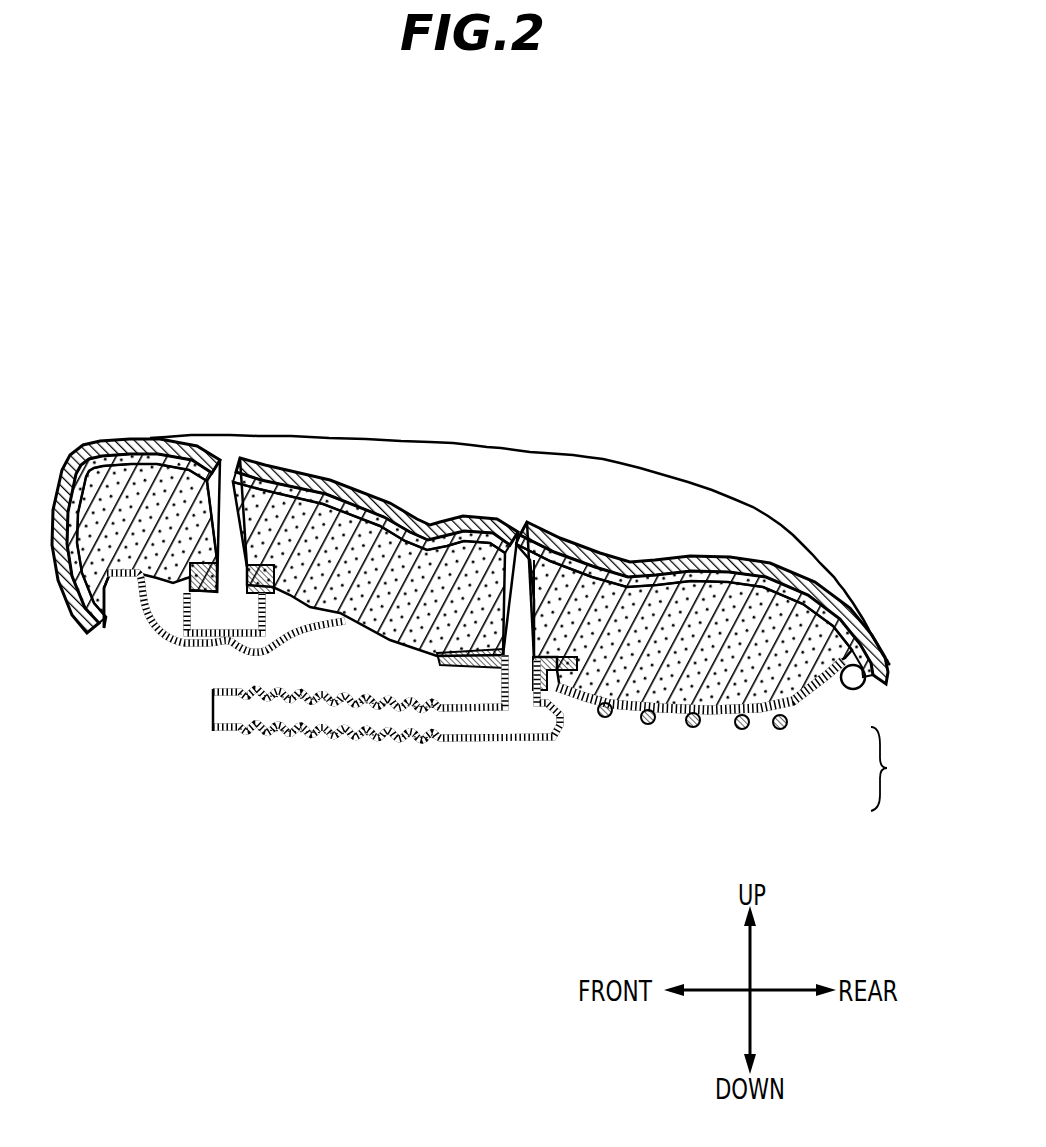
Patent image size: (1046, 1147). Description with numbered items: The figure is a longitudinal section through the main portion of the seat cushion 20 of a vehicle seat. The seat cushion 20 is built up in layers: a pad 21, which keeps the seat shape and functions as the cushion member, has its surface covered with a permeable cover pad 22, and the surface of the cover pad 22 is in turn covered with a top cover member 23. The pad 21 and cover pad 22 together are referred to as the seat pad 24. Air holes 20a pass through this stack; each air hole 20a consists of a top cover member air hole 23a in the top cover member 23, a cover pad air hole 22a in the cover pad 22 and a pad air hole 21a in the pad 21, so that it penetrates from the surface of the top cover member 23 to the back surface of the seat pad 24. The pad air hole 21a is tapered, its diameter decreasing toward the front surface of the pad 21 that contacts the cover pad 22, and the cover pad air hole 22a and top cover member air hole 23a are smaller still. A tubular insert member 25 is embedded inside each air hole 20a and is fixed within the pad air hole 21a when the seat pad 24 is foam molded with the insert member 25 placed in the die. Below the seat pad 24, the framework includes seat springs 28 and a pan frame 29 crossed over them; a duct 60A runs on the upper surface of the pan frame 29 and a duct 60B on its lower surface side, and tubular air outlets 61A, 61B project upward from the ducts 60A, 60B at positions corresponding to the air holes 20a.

The seat cushion 20 is at (742, 465).
The air hole 20a is at (230, 452).
The pad 21 is at (721, 699).
The pad air hole 21a is at (227, 542).
The cover pad 22 is at (783, 595).
The cover pad air hole 22a is at (220, 482).
The top cover member 23 is at (820, 588).
The top cover member air hole 23a is at (221, 459).
The seat pad 24 is at (898, 769).
The insert member 25 is at (197, 567).
The seat springs 28 is at (646, 724).
The pan frame 29 is at (164, 637).
The duct 60A is at (274, 608).
The duct 60B is at (347, 722).
The tubular air outlet 61A is at (240, 577).
The tubular air outlet 61B is at (531, 668).